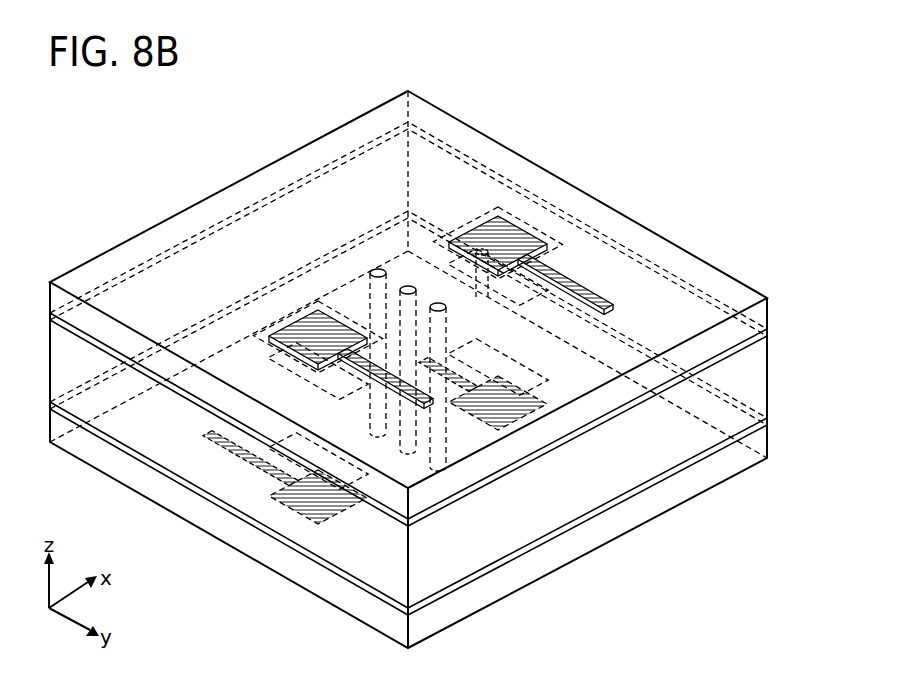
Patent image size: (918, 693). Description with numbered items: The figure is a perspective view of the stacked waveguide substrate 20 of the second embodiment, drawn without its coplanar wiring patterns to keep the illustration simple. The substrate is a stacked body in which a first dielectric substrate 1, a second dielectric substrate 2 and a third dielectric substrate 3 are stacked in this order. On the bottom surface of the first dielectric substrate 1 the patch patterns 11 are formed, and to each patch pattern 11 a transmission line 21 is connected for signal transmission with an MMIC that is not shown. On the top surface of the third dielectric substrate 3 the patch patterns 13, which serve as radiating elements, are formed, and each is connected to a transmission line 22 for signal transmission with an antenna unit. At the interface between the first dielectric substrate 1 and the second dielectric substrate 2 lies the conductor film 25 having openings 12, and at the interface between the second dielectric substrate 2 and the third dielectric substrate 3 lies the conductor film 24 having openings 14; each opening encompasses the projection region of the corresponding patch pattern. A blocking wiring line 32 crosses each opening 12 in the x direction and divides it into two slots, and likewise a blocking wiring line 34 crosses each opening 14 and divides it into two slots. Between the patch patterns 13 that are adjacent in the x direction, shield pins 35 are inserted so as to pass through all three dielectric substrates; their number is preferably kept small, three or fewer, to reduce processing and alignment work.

The stacked waveguide substrate 20 is at (117, 122).
The first dielectric substrate 1 is at (760, 442).
The second dielectric substrate 2 is at (760, 378).
The third dielectric substrate 3 is at (762, 312).
The conductor film 24 is at (766, 333).
The conductor film 25 is at (766, 421).
The patch pattern 13 is at (293, 333).
The transmission line 22 is at (378, 376).
The opening 14 is at (253, 335).
The shield pin 35 is at (405, 268).
The blocking wiring line 34 is at (484, 256).
The blocking wiring line 32 is at (548, 404).
The transmission line 21 is at (473, 386).
The opening 12 is at (540, 335).
The patch pattern 11 is at (525, 372).